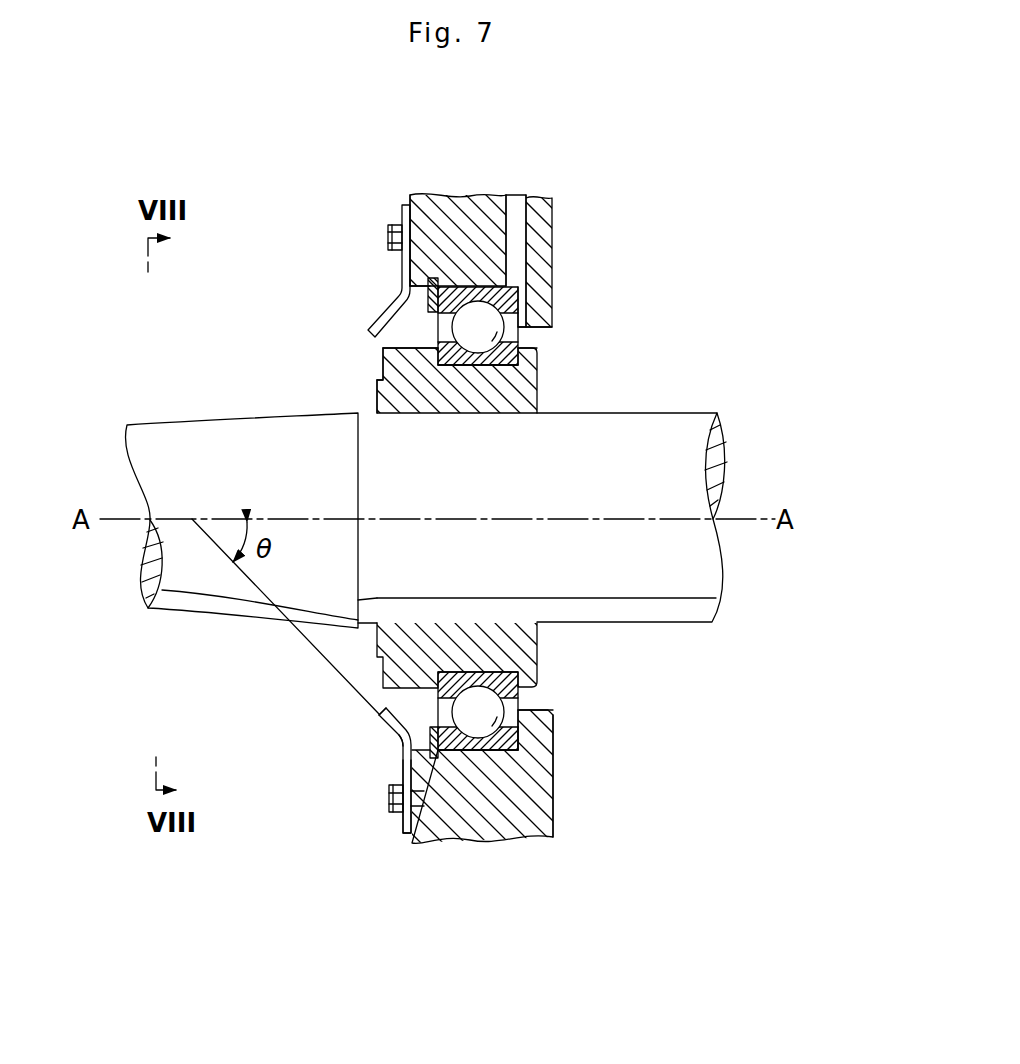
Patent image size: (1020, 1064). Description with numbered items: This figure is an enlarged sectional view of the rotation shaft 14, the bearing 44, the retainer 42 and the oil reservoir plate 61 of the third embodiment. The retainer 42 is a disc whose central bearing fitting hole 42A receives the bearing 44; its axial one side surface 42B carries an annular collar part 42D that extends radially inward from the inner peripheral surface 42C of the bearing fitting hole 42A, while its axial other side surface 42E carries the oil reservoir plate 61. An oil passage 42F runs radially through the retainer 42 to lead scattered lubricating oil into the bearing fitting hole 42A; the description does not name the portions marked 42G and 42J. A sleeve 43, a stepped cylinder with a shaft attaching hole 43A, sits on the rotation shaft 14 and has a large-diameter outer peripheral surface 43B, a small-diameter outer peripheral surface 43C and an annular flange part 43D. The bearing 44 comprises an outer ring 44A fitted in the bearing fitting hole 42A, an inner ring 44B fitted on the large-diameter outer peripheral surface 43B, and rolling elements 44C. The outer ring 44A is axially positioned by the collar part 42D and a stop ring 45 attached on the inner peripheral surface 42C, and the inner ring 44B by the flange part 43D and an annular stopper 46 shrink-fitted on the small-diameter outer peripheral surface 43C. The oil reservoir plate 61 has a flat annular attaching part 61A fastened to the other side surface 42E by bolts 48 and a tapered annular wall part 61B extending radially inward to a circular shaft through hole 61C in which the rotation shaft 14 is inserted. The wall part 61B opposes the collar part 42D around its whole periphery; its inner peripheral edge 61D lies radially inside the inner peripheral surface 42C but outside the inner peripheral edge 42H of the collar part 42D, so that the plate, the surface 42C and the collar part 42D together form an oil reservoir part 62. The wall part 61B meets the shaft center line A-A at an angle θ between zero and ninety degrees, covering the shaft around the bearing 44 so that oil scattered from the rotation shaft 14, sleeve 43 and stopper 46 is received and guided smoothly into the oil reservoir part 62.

The rotation shaft 14 is at (228, 492).
The retainer 42 is at (566, 215).
The bearing fitting hole 42A is at (533, 765).
The axial one side surface 42B is at (553, 808).
The inner peripheral surface 42C is at (452, 288).
The collar part 42D is at (537, 737).
The axial other side surface 42E is at (408, 200).
The oil passage 42F is at (518, 262).
The housing bottom portion 42G is at (468, 753).
The inner peripheral edge 42H is at (540, 335).
The housing step portion 42J is at (533, 707).
The sleeve 43 is at (551, 390).
The shaft attaching hole 43A is at (392, 418).
The large-diameter outer peripheral surface 43B is at (465, 368).
The small-diameter outer peripheral surface 43C is at (425, 380).
The flange part 43D is at (527, 360).
The bearing 44 is at (424, 319).
The outer ring 44A is at (498, 742).
The inner ring 44B is at (537, 672).
The rolling elements 44C is at (483, 712).
The stop ring 45 is at (430, 293).
The stopper 46 is at (387, 363).
The bolts 48 is at (392, 806).
The oil reservoir plate 61 is at (390, 758).
The annular attaching part 61A is at (403, 775).
The annular wall part 61B is at (400, 742).
The shaft through hole 61C is at (377, 342).
The inner peripheral edge 61D is at (380, 713).
The oil reservoir part 62 is at (420, 760).